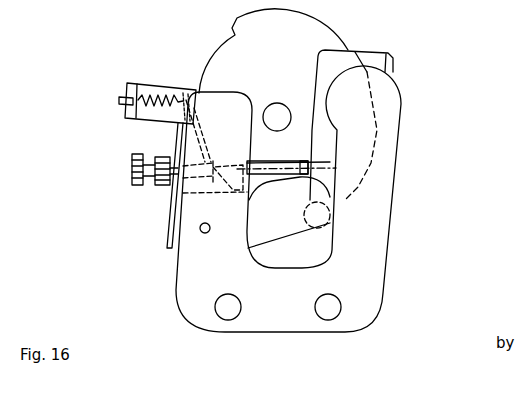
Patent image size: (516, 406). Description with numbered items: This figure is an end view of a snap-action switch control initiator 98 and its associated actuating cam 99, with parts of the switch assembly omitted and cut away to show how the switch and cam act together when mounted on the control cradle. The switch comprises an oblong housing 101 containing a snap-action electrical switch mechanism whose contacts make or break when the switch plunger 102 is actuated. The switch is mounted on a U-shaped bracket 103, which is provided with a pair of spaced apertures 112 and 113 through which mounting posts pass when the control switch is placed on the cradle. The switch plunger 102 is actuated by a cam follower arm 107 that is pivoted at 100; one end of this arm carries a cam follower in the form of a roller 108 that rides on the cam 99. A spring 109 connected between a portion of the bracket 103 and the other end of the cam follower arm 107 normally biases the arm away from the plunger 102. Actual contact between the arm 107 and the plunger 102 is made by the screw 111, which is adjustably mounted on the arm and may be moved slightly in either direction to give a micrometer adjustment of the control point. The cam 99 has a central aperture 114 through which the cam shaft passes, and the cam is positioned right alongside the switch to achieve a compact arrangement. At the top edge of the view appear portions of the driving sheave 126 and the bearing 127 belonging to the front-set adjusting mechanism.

The snap-action switch control initiator 98 is at (404, 64).
The actuating cam 99 is at (292, 23).
The pivot 100 is at (201, 234).
The oblong housing 101 is at (370, 54).
The switch plunger 102 is at (167, 195).
The U-shaped bracket 103 is at (393, 148).
The cam follower arm 107 is at (167, 227).
The roller 108 is at (230, 187).
The spring 109 is at (154, 83).
The screw 111 is at (131, 170).
The aperture 112 is at (225, 318).
The aperture 113 is at (330, 318).
The central aperture 114 is at (270, 106).
The driving sheave 126 is at (253, 4).
The bearing 127 is at (200, 8).